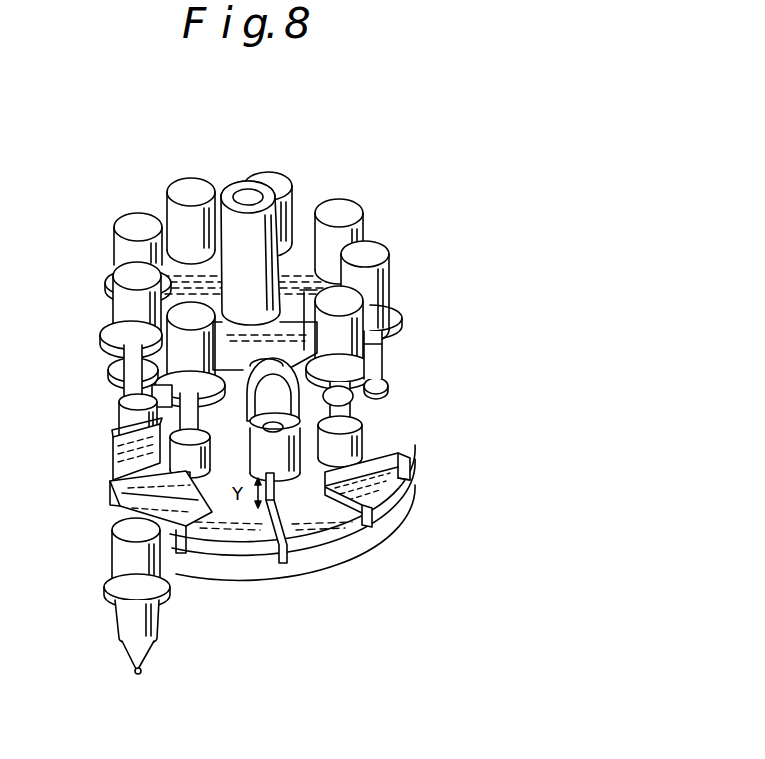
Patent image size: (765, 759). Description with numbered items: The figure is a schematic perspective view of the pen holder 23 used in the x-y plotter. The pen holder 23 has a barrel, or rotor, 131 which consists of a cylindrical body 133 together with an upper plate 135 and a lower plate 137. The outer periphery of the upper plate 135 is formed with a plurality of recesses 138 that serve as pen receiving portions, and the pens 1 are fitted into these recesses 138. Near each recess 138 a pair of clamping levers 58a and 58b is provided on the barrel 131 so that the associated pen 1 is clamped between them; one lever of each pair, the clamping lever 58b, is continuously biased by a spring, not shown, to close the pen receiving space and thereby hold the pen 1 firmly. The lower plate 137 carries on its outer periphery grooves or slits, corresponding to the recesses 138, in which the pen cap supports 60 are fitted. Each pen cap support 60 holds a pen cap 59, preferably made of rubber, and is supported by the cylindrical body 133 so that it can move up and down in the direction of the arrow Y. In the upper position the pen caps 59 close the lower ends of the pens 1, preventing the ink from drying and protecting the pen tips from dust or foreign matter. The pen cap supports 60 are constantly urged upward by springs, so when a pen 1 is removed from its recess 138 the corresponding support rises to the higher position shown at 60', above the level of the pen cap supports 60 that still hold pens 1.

The pen 1 is at (126, 560).
The pen holder 23 is at (319, 174).
The barrel (rotor) 131 is at (301, 264).
The cylindrical body 133 is at (226, 500).
The upper plate 135 is at (112, 258).
The lower plate 137 is at (150, 500).
The recess 138 is at (270, 343).
The clamping lever 58a is at (380, 387).
The clamping lever 58b is at (334, 400).
The pen cap 59 is at (357, 428).
The pen cap support 60 is at (385, 490).
The pen cap support in upper position 60' is at (233, 558).